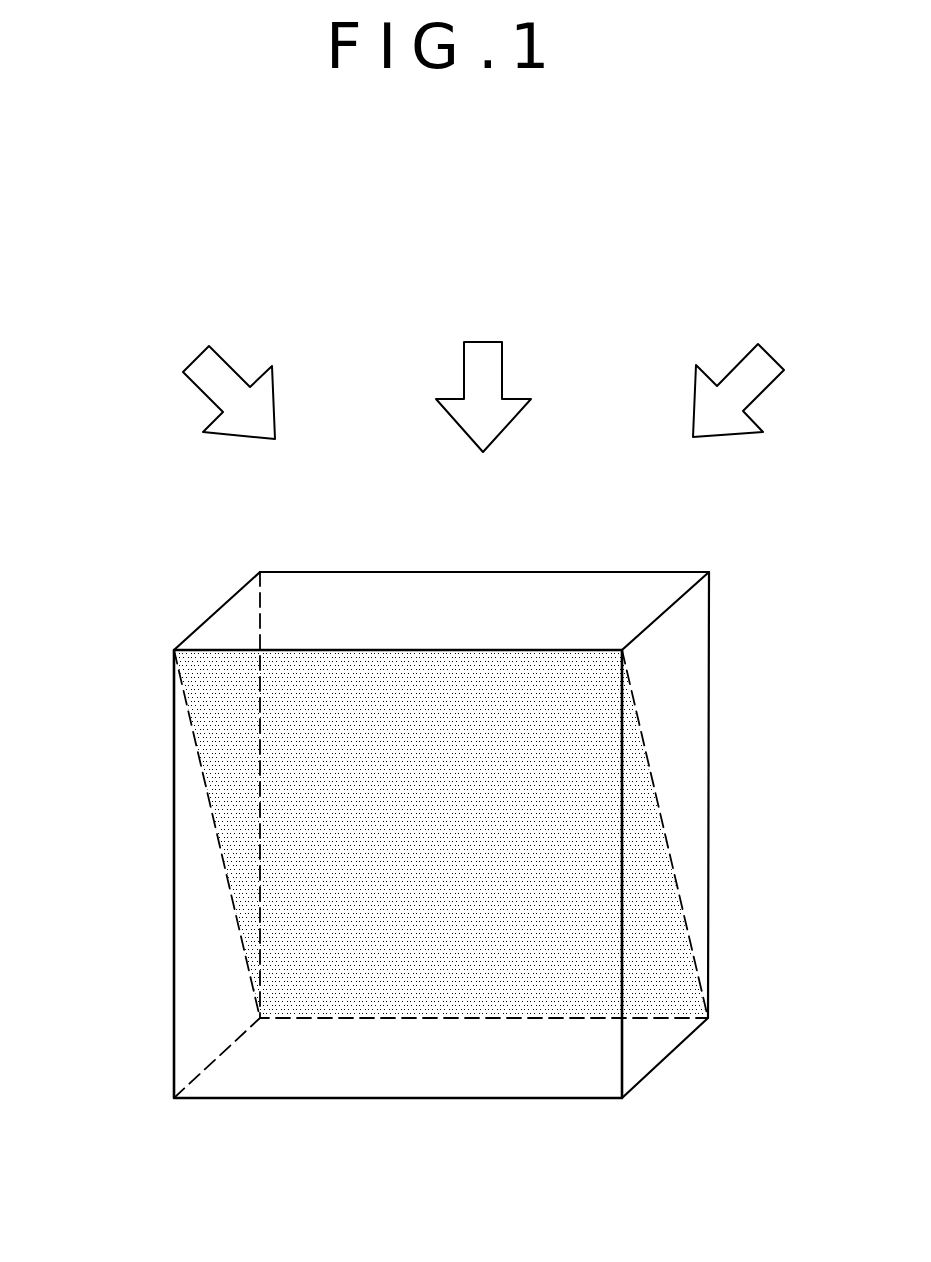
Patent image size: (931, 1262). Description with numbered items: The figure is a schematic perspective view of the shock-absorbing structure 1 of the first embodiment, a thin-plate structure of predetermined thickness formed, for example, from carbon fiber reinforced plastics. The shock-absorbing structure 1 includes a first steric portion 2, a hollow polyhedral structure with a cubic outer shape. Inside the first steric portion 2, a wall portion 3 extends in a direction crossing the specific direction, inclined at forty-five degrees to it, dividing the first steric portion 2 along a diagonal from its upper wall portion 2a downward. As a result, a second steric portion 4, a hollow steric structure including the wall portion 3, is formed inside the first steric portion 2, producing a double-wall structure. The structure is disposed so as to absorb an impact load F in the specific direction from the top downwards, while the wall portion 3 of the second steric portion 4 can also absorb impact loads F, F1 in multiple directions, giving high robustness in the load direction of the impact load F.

The shock-absorbing structure 1 is at (131, 310).
The first steric portion 2 is at (718, 645).
The upper wall portion 2a is at (326, 578).
The wall portion 3 is at (195, 742).
The second steric portion 4 is at (196, 988).
The impact load F is at (463, 358).
The impact load F1 is at (234, 365).